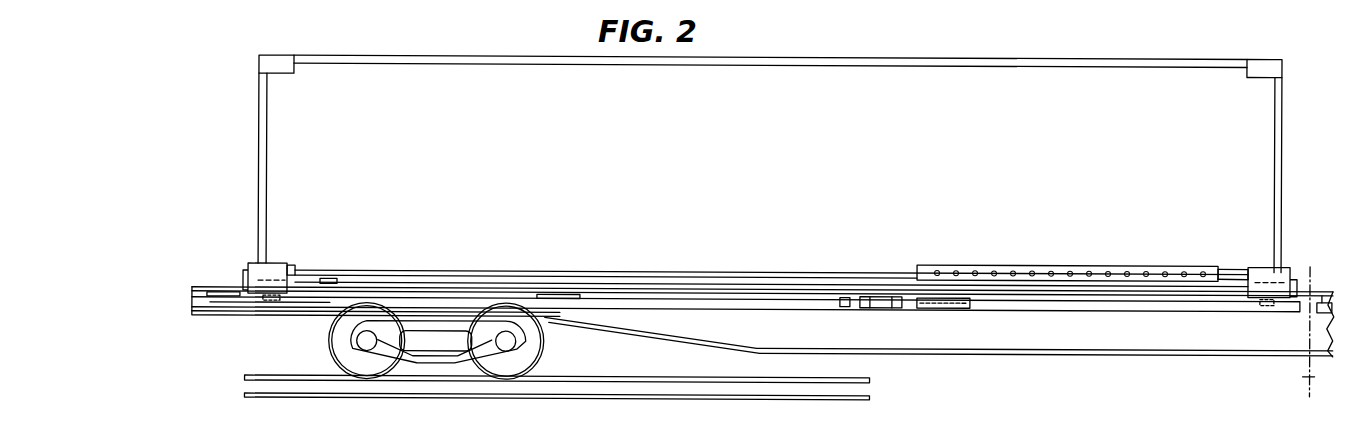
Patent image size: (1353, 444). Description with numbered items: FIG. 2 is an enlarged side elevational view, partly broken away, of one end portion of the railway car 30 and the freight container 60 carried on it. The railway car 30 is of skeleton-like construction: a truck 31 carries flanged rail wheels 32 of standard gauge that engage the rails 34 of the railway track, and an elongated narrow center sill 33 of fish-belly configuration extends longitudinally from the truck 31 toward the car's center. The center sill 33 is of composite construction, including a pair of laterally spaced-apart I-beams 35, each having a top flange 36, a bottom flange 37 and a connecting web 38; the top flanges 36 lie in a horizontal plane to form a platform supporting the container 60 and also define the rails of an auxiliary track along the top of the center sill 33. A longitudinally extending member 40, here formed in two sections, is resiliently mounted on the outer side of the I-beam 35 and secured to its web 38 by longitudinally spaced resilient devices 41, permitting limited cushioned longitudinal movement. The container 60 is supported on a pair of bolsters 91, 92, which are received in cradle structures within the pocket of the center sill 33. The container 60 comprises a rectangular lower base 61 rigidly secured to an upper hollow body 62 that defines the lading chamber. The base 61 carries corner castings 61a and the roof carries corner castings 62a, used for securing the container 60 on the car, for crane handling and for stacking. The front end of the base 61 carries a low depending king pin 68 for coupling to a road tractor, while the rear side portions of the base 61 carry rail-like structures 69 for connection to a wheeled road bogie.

The railway car 30 is at (1070, 341).
The truck 31 is at (437, 363).
The rail wheel 32 is at (532, 352).
The center sill 33 is at (1209, 340).
The rail 34 is at (776, 388).
The I-beam 35 is at (246, 317).
The top flange 36 is at (222, 292).
The bottom flange 37 is at (212, 316).
The web 38 is at (192, 301).
The longitudinally extending member 40 is at (732, 300).
The resilient device 41 is at (565, 291).
The container 60 is at (1084, 148).
The base 61 is at (440, 270).
The corner casting 61a is at (291, 268).
The body 62 is at (281, 143).
The corner casting 62a is at (287, 67).
The king pin 68 is at (332, 279).
The rail-like structure 69 is at (1030, 263).
The bolster 91 is at (272, 267).
The bolster 92 is at (1264, 266).